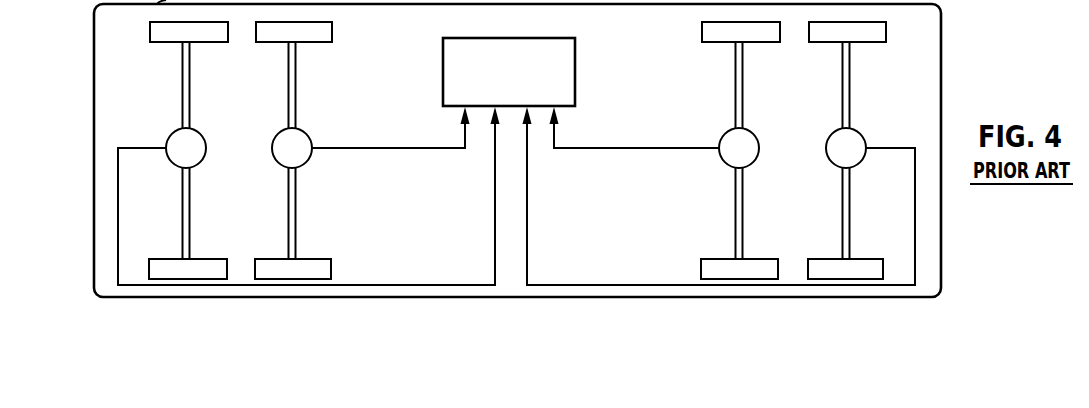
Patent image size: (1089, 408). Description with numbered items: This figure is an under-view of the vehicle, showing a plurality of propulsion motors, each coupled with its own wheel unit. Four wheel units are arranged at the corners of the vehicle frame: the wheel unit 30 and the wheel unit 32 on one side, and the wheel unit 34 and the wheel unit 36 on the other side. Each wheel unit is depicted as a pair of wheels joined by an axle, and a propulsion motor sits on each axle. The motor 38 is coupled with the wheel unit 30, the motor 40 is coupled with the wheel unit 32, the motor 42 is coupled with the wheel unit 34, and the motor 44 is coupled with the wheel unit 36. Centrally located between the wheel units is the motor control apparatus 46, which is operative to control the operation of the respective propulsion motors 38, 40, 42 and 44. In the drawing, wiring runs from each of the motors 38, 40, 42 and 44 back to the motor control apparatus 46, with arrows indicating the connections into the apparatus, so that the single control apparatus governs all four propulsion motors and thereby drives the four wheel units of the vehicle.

The wheel unit 30 is at (149, 266).
The wheel unit 32 is at (331, 272).
The wheel unit 34 is at (701, 266).
The wheel unit 36 is at (883, 273).
The propulsion motor 38 is at (201, 136).
The propulsion motor 40 is at (276, 137).
The propulsion motor 42 is at (754, 136).
The propulsion motor 44 is at (831, 140).
The motor control apparatus 46 is at (553, 38).